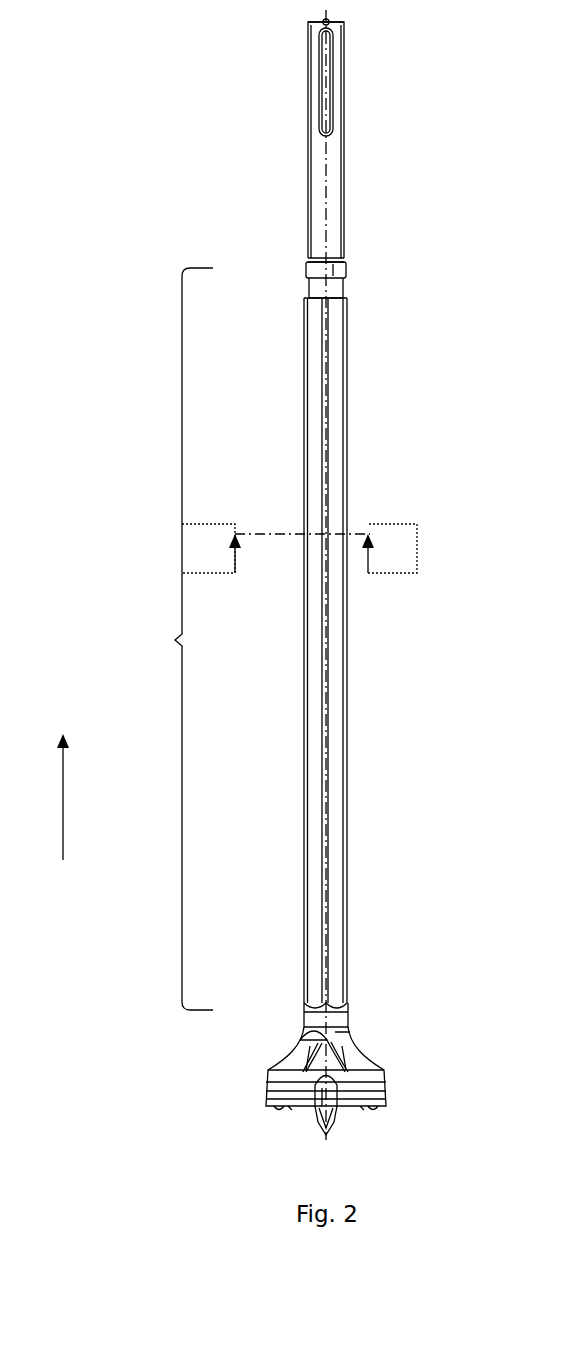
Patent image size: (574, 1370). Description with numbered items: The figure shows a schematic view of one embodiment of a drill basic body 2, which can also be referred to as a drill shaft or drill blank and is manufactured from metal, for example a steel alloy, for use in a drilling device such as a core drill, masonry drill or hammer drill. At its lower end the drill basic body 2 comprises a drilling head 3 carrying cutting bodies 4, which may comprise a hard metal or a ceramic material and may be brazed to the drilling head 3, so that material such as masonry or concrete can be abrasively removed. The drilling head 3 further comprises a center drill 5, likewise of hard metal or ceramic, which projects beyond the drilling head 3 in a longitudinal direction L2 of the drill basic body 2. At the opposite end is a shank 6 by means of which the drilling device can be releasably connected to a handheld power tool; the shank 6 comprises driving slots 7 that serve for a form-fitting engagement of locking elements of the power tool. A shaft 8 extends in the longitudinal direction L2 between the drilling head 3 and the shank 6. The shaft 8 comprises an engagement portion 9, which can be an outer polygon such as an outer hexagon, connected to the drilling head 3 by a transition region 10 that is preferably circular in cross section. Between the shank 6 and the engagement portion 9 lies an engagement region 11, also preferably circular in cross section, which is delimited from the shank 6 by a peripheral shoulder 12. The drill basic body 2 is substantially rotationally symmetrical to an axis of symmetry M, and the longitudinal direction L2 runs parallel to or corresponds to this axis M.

The drill basic body 2 is at (210, 83).
The drilling head 3 is at (262, 1076).
The cutting bodies 4 is at (279, 1111).
The center drill 5 is at (326, 1130).
The shank 6 is at (300, 241).
The driving slots 7 is at (333, 74).
The shaft 8 is at (175, 640).
The engagement portion 9 is at (303, 392).
The transition region 10 is at (304, 1012).
The engagement region 11 is at (308, 287).
The peripheral shoulder 12 is at (346, 258).
The axis of symmetry M is at (326, 168).
The longitudinal direction L2 is at (79, 797).